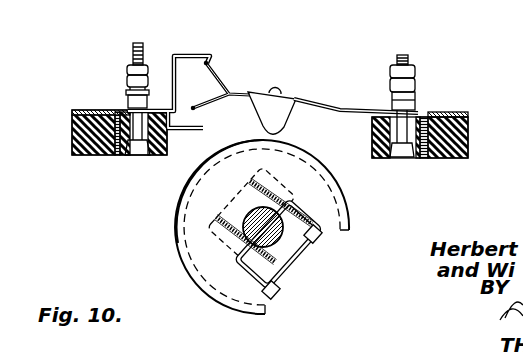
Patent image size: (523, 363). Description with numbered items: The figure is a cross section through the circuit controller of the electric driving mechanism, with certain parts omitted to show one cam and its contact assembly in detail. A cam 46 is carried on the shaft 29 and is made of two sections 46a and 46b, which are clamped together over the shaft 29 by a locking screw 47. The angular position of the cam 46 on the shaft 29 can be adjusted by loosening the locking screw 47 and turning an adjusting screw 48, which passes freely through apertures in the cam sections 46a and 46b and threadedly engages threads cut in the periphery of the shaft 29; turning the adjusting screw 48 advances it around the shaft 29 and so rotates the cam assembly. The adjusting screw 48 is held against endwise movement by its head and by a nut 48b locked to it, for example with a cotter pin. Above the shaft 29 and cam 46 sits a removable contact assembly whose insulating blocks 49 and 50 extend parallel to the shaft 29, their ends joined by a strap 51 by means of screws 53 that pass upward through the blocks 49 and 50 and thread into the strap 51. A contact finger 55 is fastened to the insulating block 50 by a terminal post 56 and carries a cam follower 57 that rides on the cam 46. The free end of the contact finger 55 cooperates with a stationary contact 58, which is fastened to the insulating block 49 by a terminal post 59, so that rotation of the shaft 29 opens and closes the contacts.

The shaft 29 is at (272, 212).
The cam 46 is at (253, 327).
The cam section 46a is at (178, 243).
The cam section 46b is at (300, 247).
The locking screw 47 is at (280, 283).
The adjusting screw 48 is at (320, 233).
The nut 48b is at (243, 212).
The insulating block 49 is at (72, 136).
The insulating block 50 is at (468, 122).
The strap 51 is at (85, 110).
The screw 53 is at (112, 152).
The contact finger 55 is at (300, 104).
The terminal post 56 is at (410, 57).
The cam follower 57 is at (284, 124).
The stationary contact 58 is at (200, 54).
The terminal post 59 is at (133, 52).